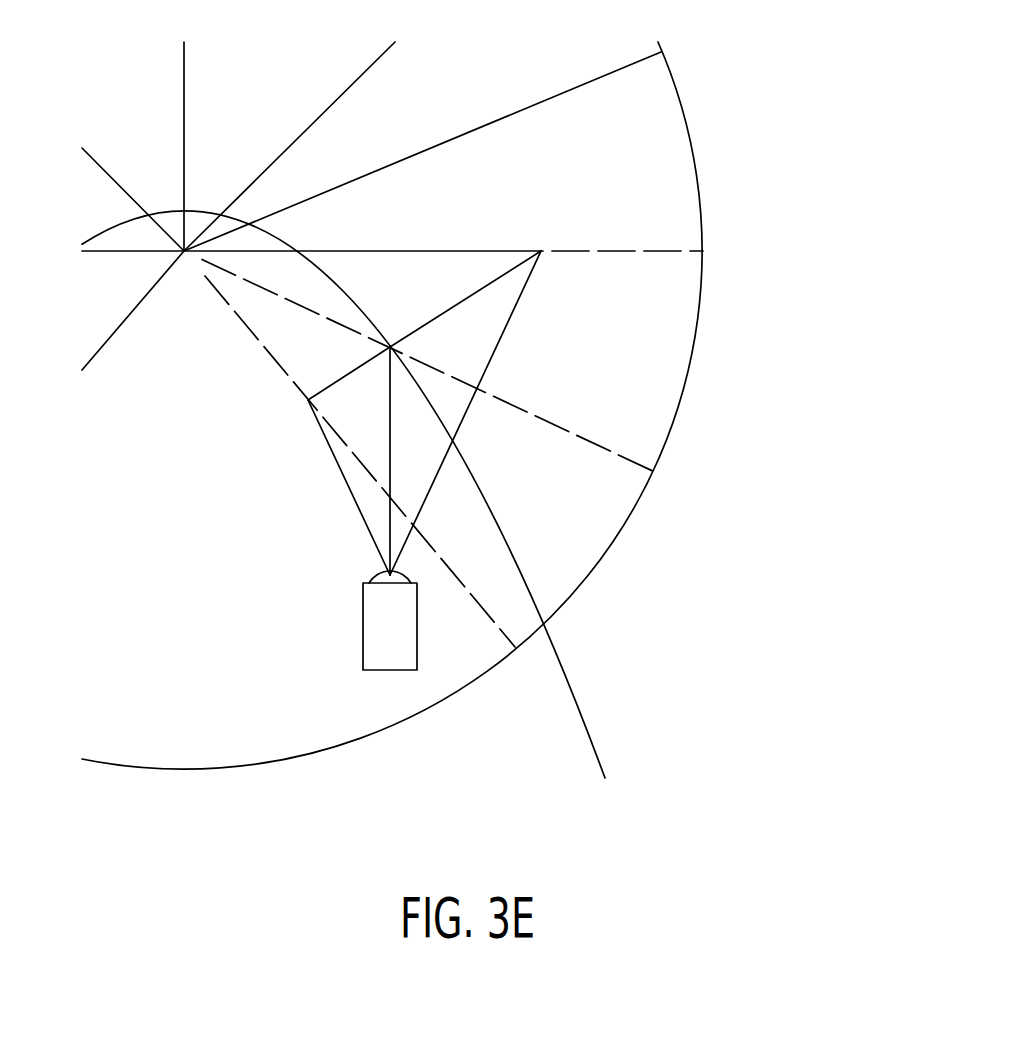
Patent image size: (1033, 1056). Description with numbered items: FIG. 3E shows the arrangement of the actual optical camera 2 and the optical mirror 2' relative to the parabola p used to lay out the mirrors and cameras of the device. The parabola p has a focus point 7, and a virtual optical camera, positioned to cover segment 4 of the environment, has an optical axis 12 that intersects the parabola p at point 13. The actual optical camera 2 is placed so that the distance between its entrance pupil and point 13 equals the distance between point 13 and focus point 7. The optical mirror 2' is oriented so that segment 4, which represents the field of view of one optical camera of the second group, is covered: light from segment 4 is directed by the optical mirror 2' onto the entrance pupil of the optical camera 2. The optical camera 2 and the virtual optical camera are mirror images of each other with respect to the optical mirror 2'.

The optical camera 2 is at (331, 620).
The optical mirror 2' is at (465, 364).
The segment 4 is at (686, 380).
The focus point 7 is at (184, 251).
The optical axis 12 is at (577, 433).
The point 13 is at (390, 347).
The parabola p is at (577, 702).